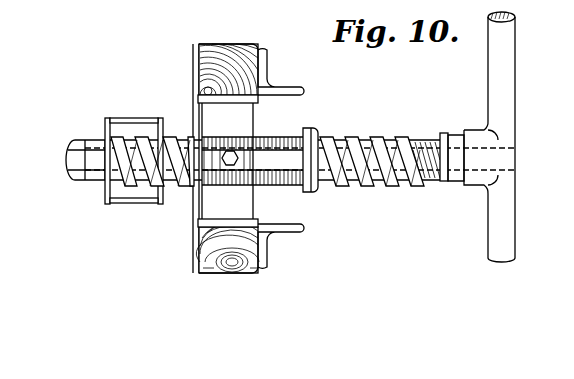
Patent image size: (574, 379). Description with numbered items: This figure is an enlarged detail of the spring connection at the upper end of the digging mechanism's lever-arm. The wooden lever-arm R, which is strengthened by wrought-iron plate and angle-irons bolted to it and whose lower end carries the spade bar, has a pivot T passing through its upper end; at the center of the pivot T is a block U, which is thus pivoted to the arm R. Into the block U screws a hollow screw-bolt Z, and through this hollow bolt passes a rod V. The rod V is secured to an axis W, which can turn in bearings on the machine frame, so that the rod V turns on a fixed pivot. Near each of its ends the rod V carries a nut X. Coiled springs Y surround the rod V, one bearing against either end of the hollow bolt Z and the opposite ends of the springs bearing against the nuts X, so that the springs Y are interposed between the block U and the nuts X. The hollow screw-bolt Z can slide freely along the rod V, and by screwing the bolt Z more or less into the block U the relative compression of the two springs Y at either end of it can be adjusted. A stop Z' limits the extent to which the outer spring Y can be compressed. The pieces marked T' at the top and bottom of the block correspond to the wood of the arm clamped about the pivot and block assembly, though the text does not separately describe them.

The rod V is at (384, 120).
The nut X is at (269, 148).
The stop Z' is at (134, 152).
The coiled spring Y is at (163, 183).
The pivot T is at (228, 60).
The lower wood block T' is at (227, 258).
The block U is at (227, 161).
The hollow screw-bolt Z is at (295, 156).
The lever-arm R is at (251, 158).
The axis W is at (489, 137).